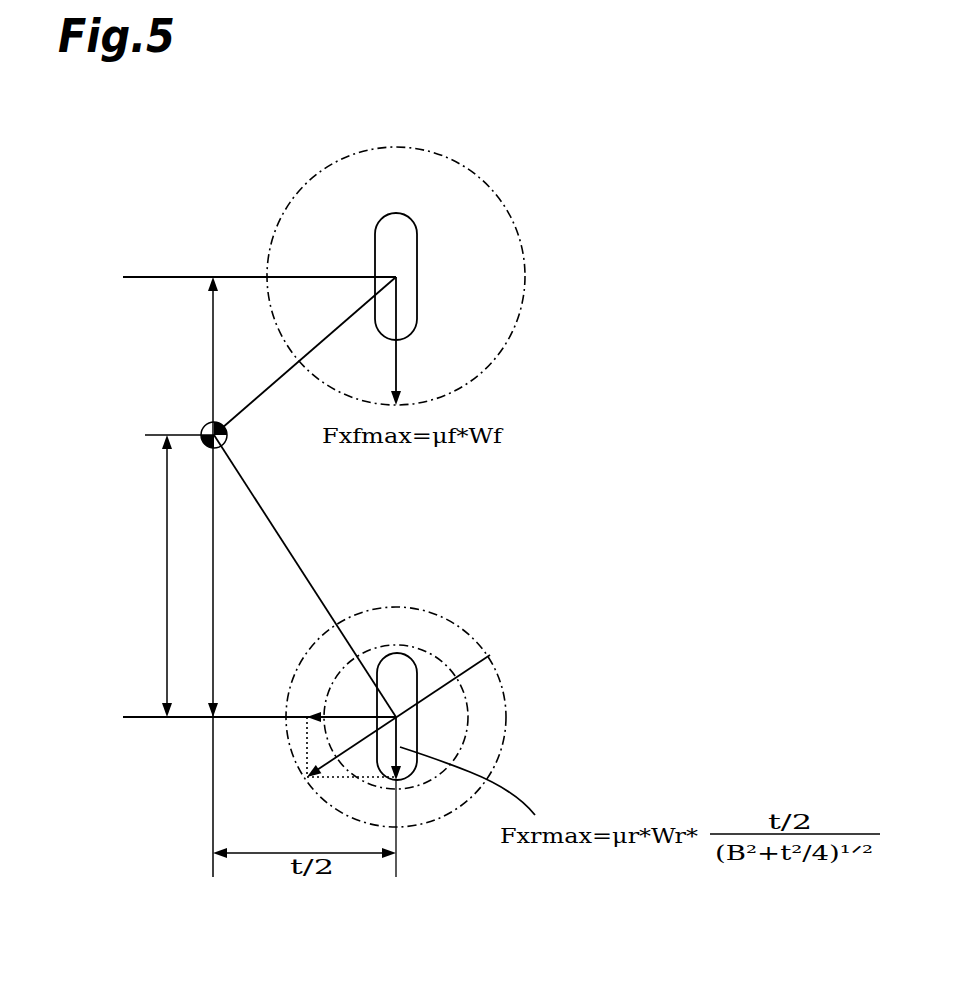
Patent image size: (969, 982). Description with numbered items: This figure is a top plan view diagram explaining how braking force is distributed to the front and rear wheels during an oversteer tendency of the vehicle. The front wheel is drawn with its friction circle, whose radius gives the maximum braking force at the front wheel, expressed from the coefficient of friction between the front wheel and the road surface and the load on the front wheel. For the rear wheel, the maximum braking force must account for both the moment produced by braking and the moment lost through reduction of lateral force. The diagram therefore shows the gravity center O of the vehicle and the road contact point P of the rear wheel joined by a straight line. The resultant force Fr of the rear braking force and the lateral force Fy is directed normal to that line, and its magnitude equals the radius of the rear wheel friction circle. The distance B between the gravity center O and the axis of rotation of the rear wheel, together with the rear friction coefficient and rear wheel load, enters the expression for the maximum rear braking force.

The gravity center O is at (206, 425).
The distance B is at (155, 576).
The lateral force Fy is at (338, 717).
The resultant force Fr is at (320, 773).
The road contact point P is at (400, 718).